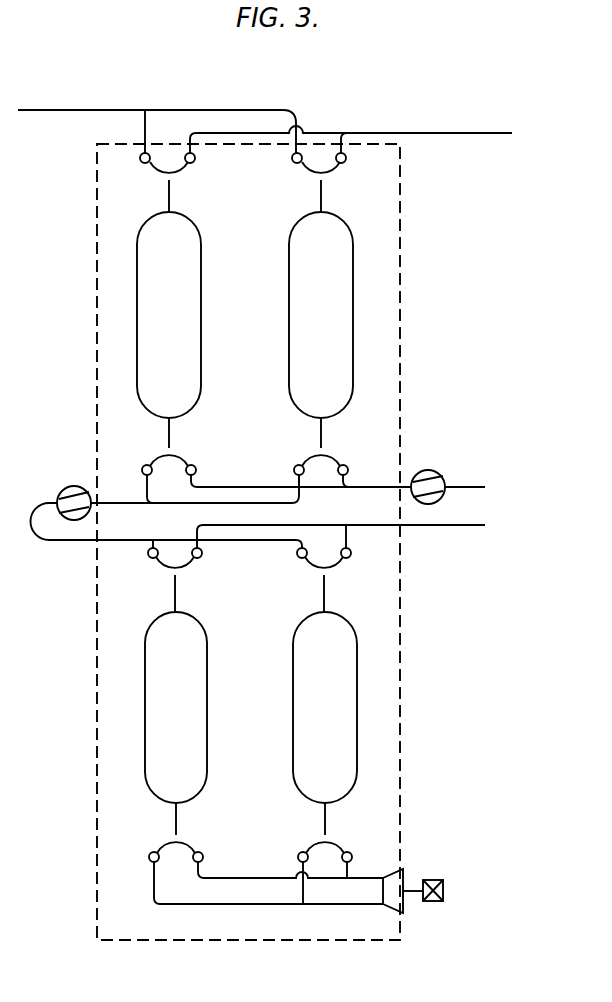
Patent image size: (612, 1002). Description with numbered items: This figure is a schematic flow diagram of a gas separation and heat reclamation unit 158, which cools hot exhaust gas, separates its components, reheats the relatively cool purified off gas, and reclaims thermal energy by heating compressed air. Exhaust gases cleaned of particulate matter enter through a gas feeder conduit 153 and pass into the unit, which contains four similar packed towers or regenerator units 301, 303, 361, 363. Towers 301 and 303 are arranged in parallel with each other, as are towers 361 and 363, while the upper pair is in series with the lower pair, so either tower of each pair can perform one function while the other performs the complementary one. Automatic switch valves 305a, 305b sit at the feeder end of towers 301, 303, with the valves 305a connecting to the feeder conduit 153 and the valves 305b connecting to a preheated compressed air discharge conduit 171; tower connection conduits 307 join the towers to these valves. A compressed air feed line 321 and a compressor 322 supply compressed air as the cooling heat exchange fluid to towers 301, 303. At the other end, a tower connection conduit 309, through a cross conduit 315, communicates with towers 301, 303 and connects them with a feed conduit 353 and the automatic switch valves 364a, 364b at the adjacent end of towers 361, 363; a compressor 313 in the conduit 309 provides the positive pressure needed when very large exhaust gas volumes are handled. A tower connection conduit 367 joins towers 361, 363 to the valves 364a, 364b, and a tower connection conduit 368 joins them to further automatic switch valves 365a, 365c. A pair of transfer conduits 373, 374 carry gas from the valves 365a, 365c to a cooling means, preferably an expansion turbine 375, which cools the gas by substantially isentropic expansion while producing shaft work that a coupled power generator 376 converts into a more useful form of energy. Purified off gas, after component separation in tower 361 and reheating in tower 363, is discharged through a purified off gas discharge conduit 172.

The gas feeder conduit 153 is at (65, 110).
The preheated compressed air discharge conduit 171 is at (456, 133).
The gas separation and heat reclamation unit 158 is at (398, 341).
The automatic switch valve 305a is at (141, 163).
The automatic switch valve 305b is at (189, 152).
The tower connection conduit 307 is at (318, 197).
The regenerator unit 301 is at (186, 323).
The regenerator unit 303 is at (337, 321).
The cross conduit 315 is at (238, 479).
The compressor 322 is at (420, 475).
The compressed air feed line 321 is at (468, 487).
The compressor 313 is at (73, 486).
The tower connection conduit 309 is at (106, 505).
The purified off gas discharge conduit 172 is at (442, 528).
The feed conduit 353 is at (280, 542).
The automatic switch valve 364a is at (150, 560).
The automatic switch valve 364b is at (198, 560).
The tower connection conduit 367 is at (175, 598).
The regenerator unit 361 is at (192, 712).
The regenerator unit 363 is at (339, 710).
The tower connection conduit 368 is at (326, 816).
The automatic switch valve 365a is at (149, 856).
The automatic switch valve 365c is at (201, 855).
The transfer conduit 374 is at (262, 880).
The transfer conduit 373 is at (268, 907).
The expansion turbine 375 is at (391, 909).
The power generator 376 is at (444, 890).